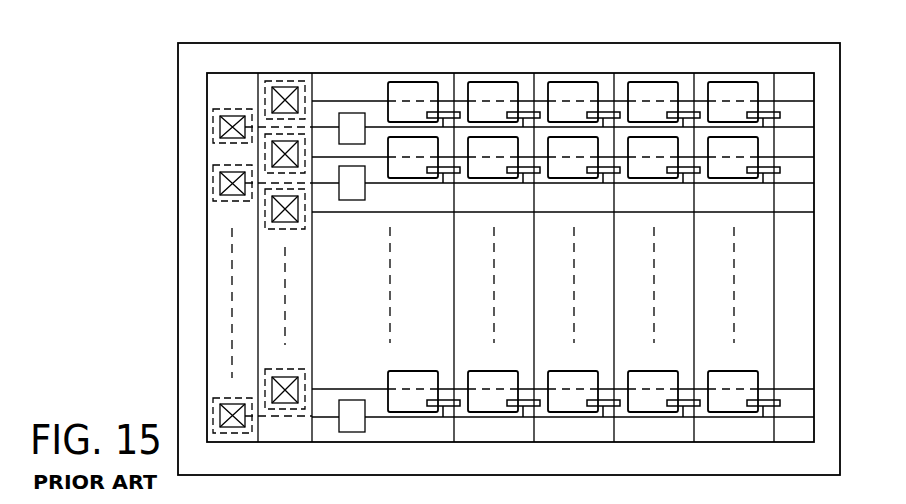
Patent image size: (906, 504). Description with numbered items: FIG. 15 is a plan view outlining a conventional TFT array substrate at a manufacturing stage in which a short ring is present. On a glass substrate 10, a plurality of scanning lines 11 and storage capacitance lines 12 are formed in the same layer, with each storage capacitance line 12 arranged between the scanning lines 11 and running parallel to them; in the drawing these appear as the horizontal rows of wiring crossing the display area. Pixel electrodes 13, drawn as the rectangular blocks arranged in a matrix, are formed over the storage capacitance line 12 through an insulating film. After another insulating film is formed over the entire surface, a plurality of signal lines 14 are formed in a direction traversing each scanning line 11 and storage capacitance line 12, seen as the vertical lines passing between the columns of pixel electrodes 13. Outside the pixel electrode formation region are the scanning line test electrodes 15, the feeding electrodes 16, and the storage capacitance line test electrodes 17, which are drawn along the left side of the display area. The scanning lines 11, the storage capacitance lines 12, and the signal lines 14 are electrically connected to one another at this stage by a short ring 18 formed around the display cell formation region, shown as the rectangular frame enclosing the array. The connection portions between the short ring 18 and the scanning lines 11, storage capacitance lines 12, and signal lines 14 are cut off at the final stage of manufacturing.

The glass substrate 10 is at (178, 76).
The scanning line 11 is at (381, 126).
The storage capacitance line 12 is at (328, 100).
The pixel electrode 13 is at (505, 92).
The signal line 14 is at (455, 90).
The scanning line test electrode 15 is at (357, 113).
The feeding electrode 16 is at (220, 128).
The storage capacitance line test electrode 17 is at (284, 92).
The short ring 18 is at (207, 112).